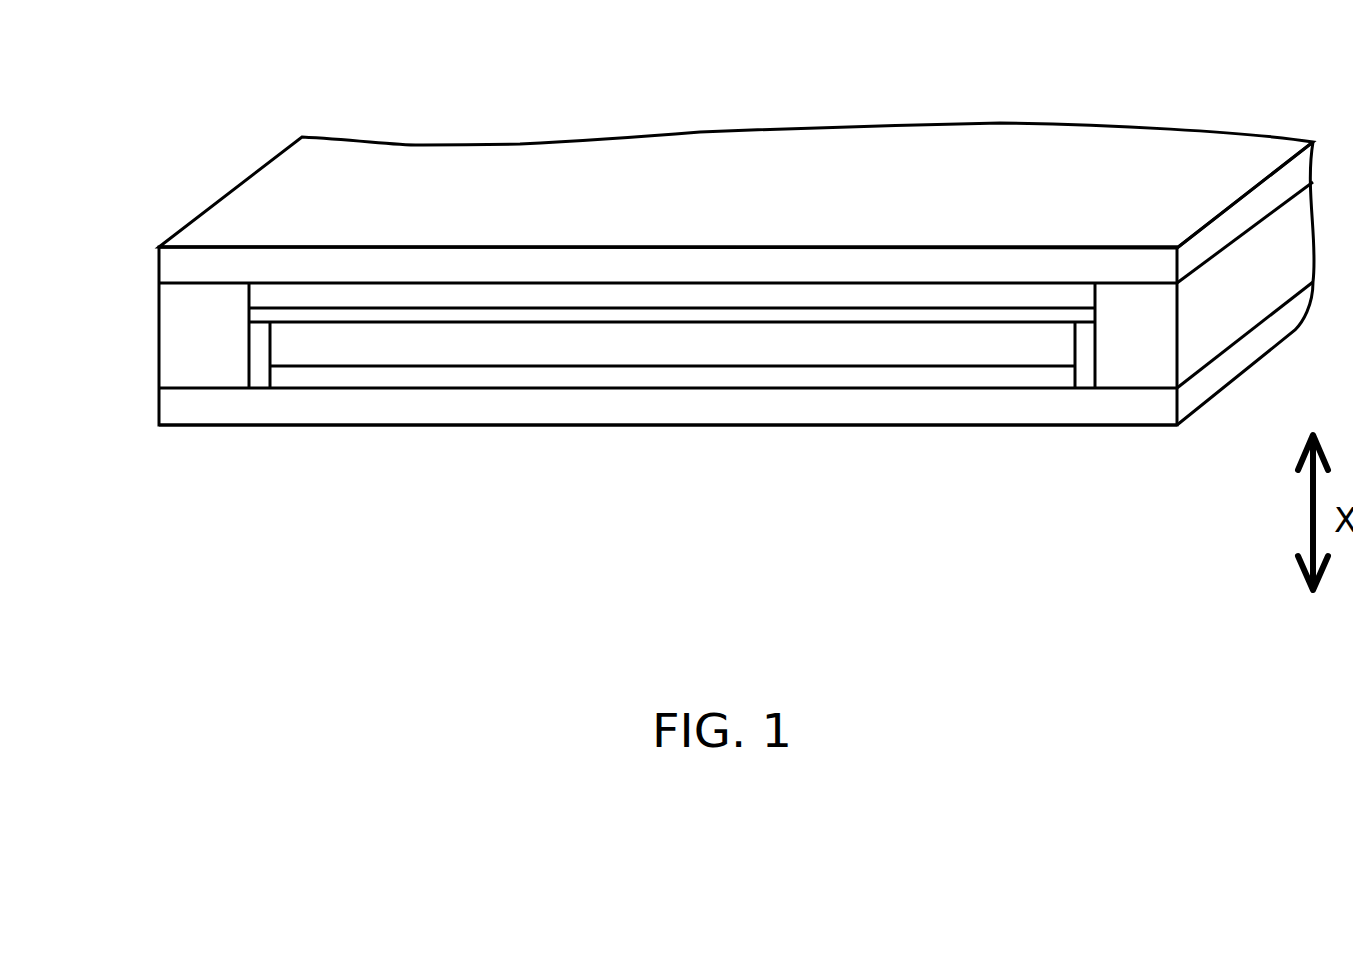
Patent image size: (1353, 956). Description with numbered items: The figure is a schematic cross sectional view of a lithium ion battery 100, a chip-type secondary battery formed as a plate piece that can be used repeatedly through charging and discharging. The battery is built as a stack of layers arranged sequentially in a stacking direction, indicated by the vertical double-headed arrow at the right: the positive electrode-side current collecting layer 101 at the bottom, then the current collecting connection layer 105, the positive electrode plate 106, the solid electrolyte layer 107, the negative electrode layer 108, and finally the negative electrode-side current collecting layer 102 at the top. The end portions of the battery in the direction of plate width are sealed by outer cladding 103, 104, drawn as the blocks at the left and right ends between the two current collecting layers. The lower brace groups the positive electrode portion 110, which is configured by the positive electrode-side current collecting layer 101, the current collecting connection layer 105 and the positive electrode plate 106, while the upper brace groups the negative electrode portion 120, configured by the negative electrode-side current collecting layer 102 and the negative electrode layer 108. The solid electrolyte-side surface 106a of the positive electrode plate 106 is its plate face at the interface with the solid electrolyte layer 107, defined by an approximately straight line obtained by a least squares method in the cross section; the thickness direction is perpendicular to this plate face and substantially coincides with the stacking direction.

The lithium ion battery 100 is at (222, 176).
The positive electrode-side current collecting layer 101 is at (213, 410).
The negative electrode-side current collecting layer 102 is at (289, 267).
The outer cladding 103 is at (187, 343).
The outer cladding 104 is at (1153, 355).
The current collecting connection layer 105 is at (415, 380).
The positive electrode plate 106 is at (328, 353).
The solid electrolyte-side surface 106a is at (517, 322).
The solid electrolyte layer 107 is at (688, 317).
The negative electrode layer 108 is at (468, 295).
The positive electrode portion 110 is at (507, 493).
The negative electrode portion 120 is at (477, 78).